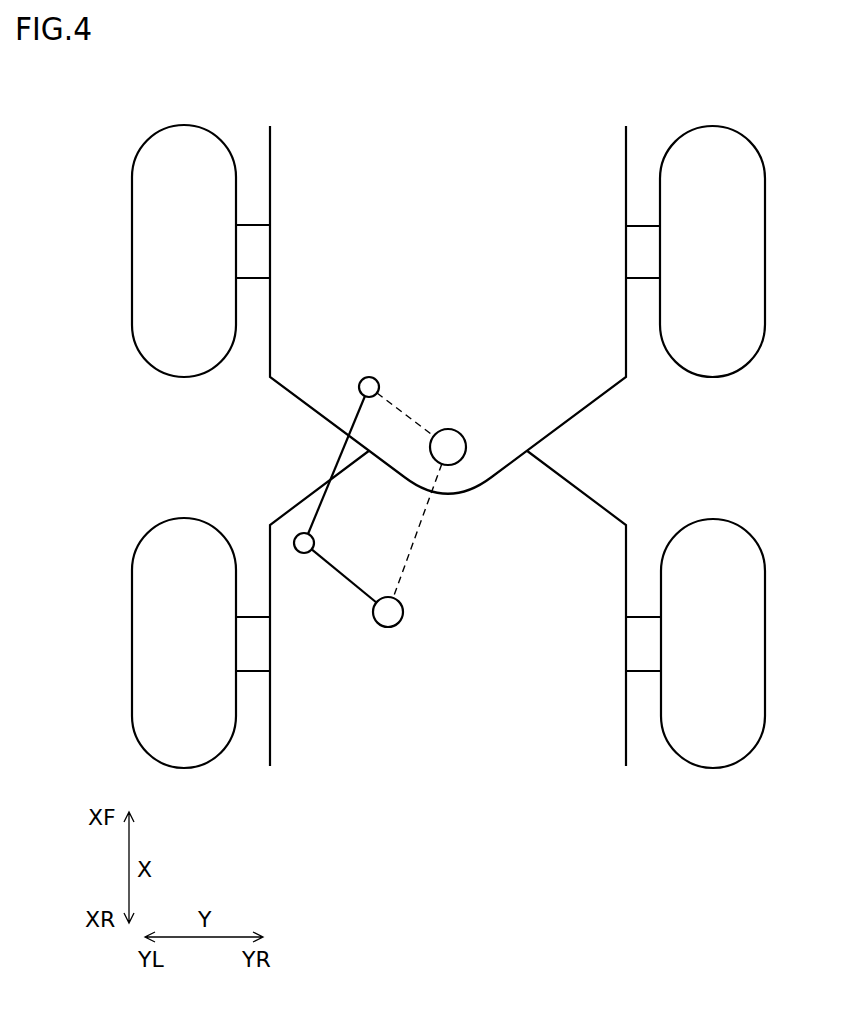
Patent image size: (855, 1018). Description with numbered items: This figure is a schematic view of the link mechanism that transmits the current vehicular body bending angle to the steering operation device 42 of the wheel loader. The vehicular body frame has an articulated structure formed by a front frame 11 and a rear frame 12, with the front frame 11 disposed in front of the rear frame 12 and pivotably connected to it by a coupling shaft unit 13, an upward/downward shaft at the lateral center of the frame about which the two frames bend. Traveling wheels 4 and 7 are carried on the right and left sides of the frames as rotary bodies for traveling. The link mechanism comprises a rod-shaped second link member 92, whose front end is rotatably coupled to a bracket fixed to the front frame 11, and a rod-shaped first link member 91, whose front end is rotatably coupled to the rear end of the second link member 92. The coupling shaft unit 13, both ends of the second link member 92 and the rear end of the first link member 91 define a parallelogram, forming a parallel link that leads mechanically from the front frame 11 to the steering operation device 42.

The traveling wheel 4 is at (155, 252).
The traveling wheel 7 is at (155, 646).
The front frame 11 is at (539, 180).
The rear frame 12 is at (554, 727).
The coupling shaft unit 13 is at (466, 436).
The steering operation device 42 is at (384, 627).
The first link member 91 is at (332, 575).
The second link member 92 is at (336, 457).